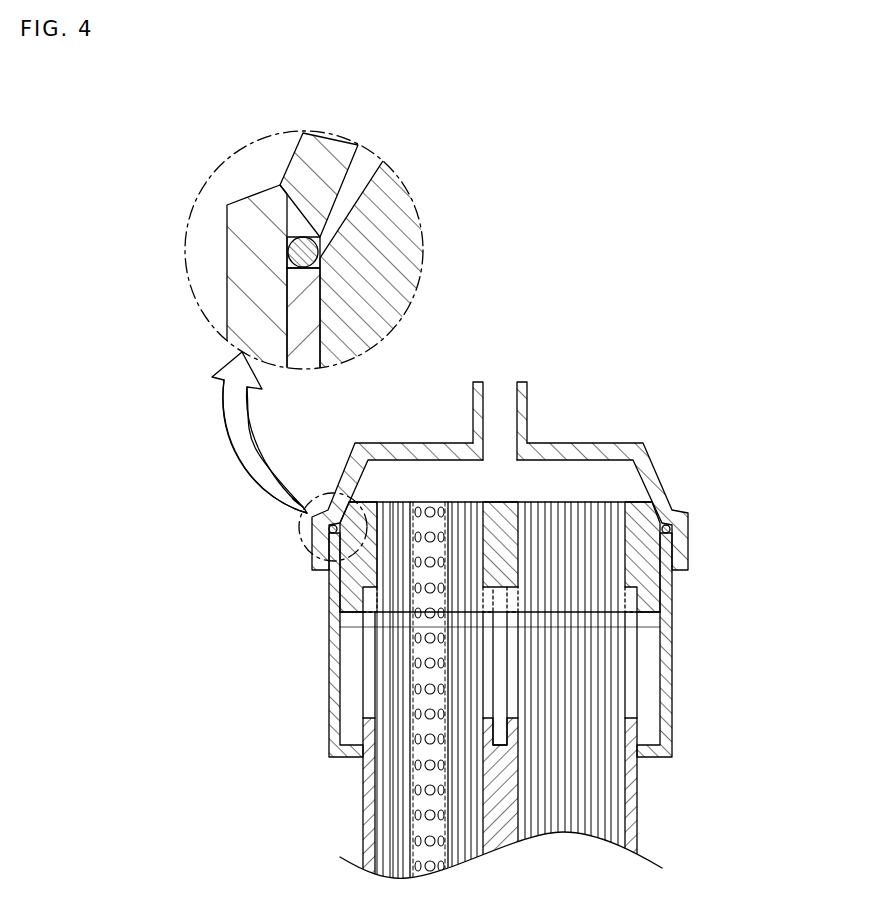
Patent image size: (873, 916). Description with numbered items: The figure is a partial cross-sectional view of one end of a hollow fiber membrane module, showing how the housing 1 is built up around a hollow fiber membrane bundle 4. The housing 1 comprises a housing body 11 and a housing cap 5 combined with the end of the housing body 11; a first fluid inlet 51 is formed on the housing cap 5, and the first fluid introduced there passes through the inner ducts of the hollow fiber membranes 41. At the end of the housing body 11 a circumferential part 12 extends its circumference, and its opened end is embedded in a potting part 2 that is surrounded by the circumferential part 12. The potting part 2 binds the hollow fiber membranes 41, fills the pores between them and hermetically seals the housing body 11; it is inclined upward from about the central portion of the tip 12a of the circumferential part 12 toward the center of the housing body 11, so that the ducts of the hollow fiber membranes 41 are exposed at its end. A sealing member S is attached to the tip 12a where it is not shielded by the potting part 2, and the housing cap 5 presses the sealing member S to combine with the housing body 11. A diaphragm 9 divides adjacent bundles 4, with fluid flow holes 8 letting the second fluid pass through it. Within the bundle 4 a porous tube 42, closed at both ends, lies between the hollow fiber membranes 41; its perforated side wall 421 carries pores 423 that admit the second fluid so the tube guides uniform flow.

The housing 1 is at (666, 833).
The potting part 2 is at (650, 583).
The hollow fiber membrane bundle 4 is at (451, 639).
The housing cap 5 is at (660, 475).
The fluid flow hole 8 is at (634, 657).
The diaphragm 9 is at (488, 721).
The housing body 11 is at (628, 798).
The circumferential part 12 is at (673, 703).
The tip of the circumferential part 12a is at (287, 262).
The hollow fiber membrane 41 is at (403, 790).
The porous tube 42 is at (408, 578).
The first fluid inlet 51 is at (523, 407).
The perforated plate 421 is at (433, 500).
The pore 423 is at (432, 637).
The sealing member S is at (287, 226).